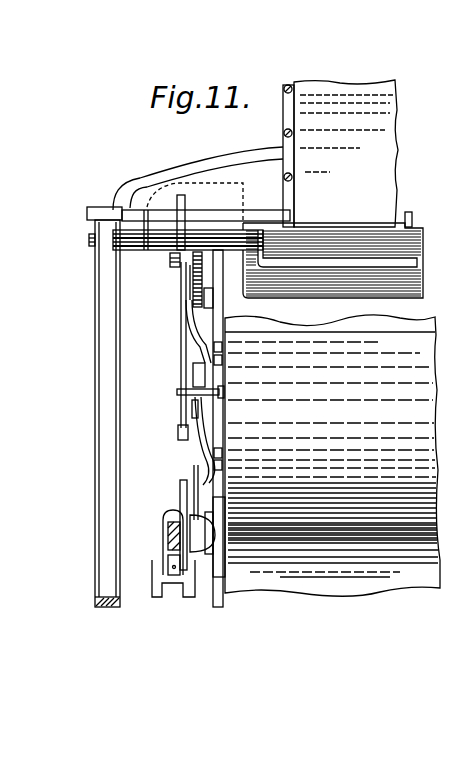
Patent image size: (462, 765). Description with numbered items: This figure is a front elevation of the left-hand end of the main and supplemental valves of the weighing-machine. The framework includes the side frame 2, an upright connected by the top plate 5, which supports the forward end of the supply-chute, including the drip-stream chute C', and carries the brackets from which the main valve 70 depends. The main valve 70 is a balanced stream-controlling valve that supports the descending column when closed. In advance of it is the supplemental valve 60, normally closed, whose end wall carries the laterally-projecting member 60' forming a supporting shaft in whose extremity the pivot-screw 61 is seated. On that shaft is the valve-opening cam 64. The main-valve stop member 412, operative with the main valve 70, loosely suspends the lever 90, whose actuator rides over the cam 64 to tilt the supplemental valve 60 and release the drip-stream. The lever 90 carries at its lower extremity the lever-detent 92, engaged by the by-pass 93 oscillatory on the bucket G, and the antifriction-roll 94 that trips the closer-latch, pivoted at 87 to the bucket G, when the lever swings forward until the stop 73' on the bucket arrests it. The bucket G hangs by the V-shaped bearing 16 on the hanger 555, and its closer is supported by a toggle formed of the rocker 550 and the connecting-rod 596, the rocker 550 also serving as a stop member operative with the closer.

The side frame 2 is at (96, 404).
The top plate 5 is at (188, 164).
The V-shaped bearing 16 is at (156, 566).
The supplemental valve 60 is at (277, 229).
The laterally-projecting member 60' is at (163, 262).
The pivot-screw 61 is at (89, 243).
The valve-opening cam 64 is at (186, 203).
The main valve 70 is at (424, 271).
The stop 73' is at (183, 394).
The closer-latch pivot 87 is at (194, 468).
The lever 90 is at (186, 312).
The lever-detent 92 is at (178, 432).
The by-pass 93 is at (182, 485).
The antifriction-roll 94 is at (193, 381).
The main-valve stop member 412 is at (204, 284).
The rocker 550 is at (184, 282).
The hanger 555 is at (168, 528).
The connecting-rod 596 is at (197, 448).
The drip-stream chute C' is at (352, 153).
The bucket G is at (332, 455).